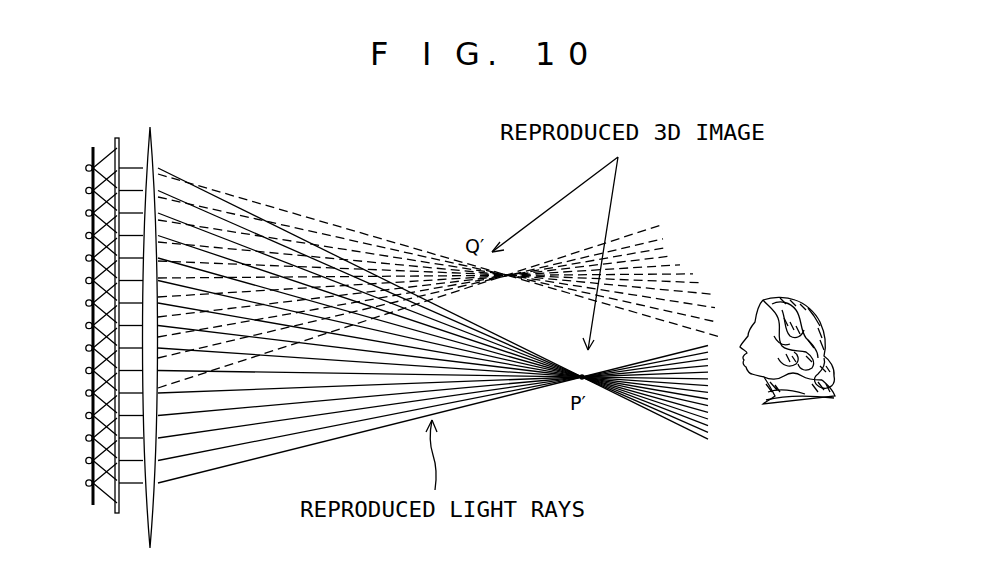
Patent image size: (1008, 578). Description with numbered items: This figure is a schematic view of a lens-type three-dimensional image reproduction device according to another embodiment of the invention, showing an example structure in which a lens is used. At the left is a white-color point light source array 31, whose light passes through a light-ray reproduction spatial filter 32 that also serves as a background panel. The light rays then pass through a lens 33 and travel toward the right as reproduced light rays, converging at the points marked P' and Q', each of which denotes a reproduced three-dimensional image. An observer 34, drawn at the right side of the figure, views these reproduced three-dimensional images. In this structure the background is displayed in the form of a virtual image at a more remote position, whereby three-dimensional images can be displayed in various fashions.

The white-color point light source array 31 is at (91, 508).
The light-ray reproduction spatial filter 32 is at (117, 515).
The lens 33 is at (157, 507).
The observer 34 is at (790, 412).